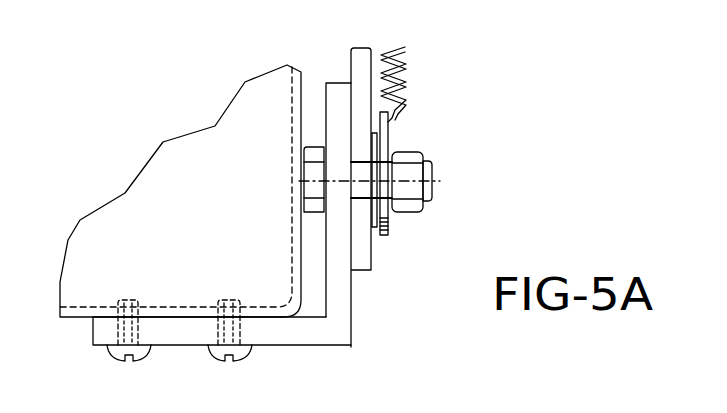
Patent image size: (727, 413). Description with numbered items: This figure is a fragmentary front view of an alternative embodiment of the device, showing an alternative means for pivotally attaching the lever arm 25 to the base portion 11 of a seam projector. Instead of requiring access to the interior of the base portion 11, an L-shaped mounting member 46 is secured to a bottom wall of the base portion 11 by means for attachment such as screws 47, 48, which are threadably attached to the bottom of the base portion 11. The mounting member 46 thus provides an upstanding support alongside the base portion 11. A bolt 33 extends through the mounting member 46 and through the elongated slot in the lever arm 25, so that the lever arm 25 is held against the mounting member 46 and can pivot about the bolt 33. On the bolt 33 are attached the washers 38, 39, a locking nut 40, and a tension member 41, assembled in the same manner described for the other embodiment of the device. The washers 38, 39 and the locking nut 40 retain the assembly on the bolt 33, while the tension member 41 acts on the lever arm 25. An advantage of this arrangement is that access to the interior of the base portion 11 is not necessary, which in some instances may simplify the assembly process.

The base portion 11 is at (157, 177).
The lever arm 25 is at (360, 258).
The bolt 33 is at (316, 200).
The washer 38 is at (376, 232).
The washer 39 is at (388, 220).
The locking nut 40 is at (403, 157).
The tension member 41 is at (393, 118).
The mounting member 46 is at (352, 343).
The screw 47 is at (112, 358).
The screw 48 is at (243, 358).